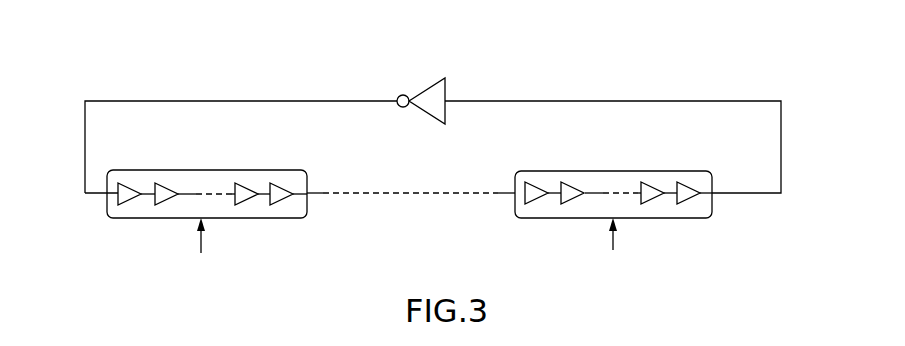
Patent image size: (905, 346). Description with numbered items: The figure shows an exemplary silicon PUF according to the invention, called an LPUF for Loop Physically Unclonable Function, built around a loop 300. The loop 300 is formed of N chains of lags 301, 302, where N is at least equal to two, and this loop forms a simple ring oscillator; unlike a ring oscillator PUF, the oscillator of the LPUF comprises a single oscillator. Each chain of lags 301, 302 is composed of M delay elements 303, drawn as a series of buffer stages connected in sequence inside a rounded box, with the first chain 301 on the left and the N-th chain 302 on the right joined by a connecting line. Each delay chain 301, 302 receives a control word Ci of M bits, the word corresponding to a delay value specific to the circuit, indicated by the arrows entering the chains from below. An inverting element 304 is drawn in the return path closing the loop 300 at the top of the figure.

The loop 300 is at (143, 80).
The chain of lags 301 is at (248, 218).
The chain of lags 302 is at (658, 218).
The delay element 303 is at (131, 184).
The inverter 304 is at (432, 79).